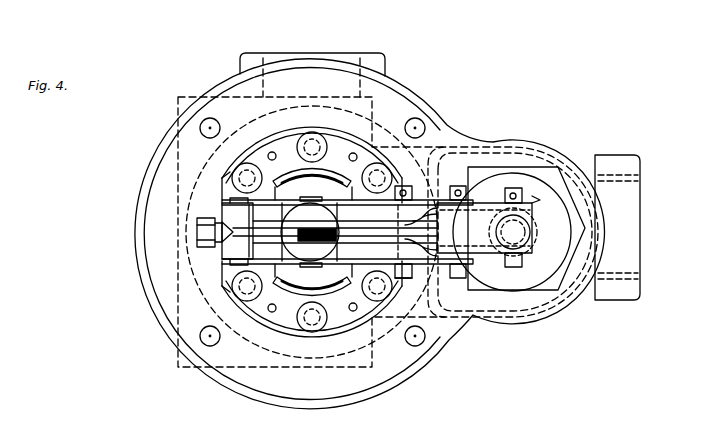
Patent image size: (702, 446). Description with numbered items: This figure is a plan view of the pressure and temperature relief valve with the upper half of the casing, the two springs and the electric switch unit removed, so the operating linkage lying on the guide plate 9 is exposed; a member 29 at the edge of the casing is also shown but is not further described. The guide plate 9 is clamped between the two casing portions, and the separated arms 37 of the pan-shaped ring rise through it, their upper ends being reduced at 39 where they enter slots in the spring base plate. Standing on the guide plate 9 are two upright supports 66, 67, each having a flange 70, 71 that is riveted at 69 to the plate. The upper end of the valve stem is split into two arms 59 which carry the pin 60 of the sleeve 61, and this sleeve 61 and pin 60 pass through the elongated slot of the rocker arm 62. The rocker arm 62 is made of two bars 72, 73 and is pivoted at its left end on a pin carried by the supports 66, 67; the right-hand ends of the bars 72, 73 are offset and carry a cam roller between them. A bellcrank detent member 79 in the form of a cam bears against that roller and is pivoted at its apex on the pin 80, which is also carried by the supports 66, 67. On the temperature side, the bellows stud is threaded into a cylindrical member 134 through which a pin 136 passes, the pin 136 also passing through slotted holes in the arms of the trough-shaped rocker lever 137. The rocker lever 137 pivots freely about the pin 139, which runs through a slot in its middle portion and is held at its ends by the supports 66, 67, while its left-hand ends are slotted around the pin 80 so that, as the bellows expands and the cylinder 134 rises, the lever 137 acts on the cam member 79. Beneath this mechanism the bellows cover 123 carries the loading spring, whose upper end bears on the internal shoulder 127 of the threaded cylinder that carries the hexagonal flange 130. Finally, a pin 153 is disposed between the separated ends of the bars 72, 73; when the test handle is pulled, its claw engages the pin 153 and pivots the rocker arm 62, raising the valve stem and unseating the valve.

The guide plate 9 is at (212, 208).
The bracket 29 is at (345, 53).
The arms 37 is at (284, 232).
The reduced upper portion of arms 39 is at (344, 238).
The arms of valve stem 59 is at (248, 231).
The pin 60 is at (312, 280).
The sleeve 61 is at (170, 209).
The rocker arm 62 is at (240, 248).
The upright support 66 is at (293, 192).
The upright support 67 is at (222, 272).
The rivets 69 is at (257, 298).
The flange 70 is at (266, 140).
The flange 71 is at (262, 268).
The bar 72 is at (197, 221).
The bar 73 is at (197, 238).
The bellcrank detent member 79 is at (362, 232).
The pin 80 is at (400, 272).
The cover 123 is at (545, 245).
The internal shoulder 127 is at (543, 268).
The hexagonal flange 130 is at (488, 287).
The cylindrical member 134 is at (543, 246).
The pin 136 is at (517, 192).
The trough-shaped rocker lever 137 is at (539, 193).
The pin 139 is at (464, 182).
The pin 153 is at (210, 251).